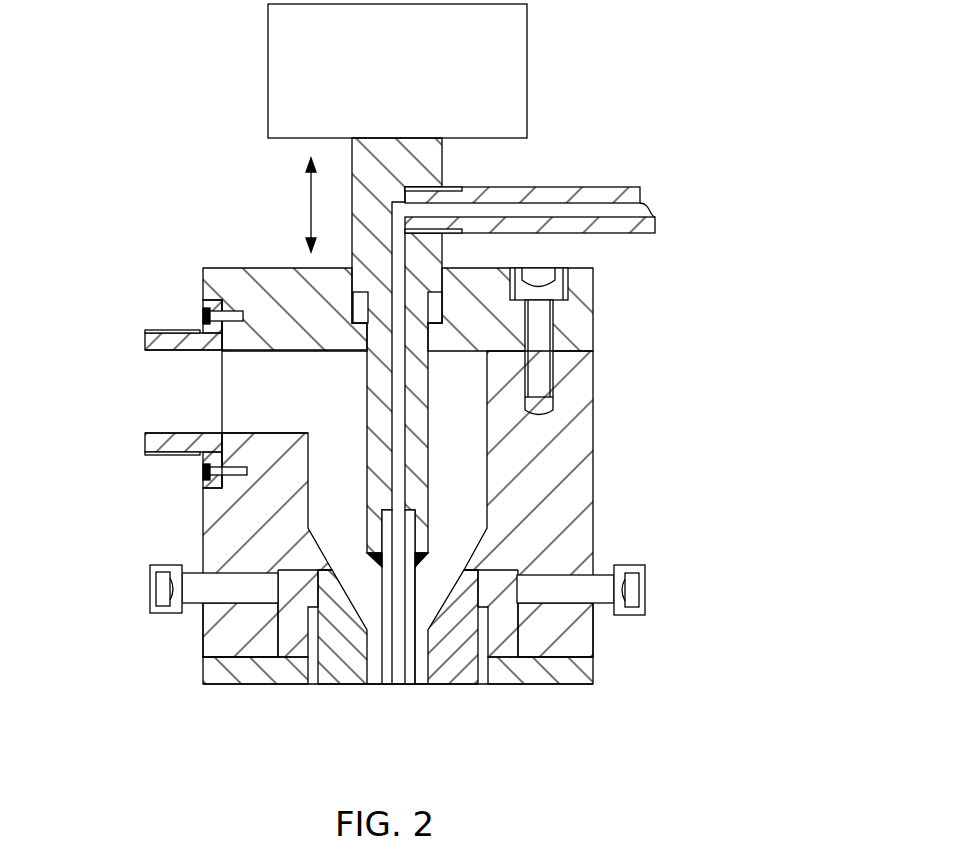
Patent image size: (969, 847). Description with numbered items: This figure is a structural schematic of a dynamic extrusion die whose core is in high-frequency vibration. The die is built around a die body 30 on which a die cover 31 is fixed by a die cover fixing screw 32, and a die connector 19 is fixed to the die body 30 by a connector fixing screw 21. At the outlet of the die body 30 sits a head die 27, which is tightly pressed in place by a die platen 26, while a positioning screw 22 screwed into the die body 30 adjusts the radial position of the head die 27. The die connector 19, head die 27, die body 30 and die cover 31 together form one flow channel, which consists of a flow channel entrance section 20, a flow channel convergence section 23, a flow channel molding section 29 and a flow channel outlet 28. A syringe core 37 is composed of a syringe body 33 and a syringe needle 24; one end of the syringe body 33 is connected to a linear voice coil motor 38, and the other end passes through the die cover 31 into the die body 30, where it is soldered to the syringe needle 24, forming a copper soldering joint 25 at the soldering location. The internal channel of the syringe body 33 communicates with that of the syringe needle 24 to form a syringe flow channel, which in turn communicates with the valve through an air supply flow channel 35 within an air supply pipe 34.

The die connector 19 is at (182, 343).
The flow channel entrance section 20 is at (180, 405).
The connector fixing screw 21 is at (205, 470).
The positioning screw 22 is at (177, 600).
The flow channel convergence section 23 is at (447, 569).
The syringe needle 24 is at (380, 565).
The copper soldering joint 25 is at (430, 567).
The die platen 26 is at (225, 678).
The head die 27 is at (328, 677).
The flow channel outlet 28 is at (375, 686).
The flow channel molding section 29 is at (420, 657).
The die body 30 is at (547, 476).
The die cover 31 is at (565, 322).
The die cover fixing screw 32 is at (543, 272).
The syringe body 33 is at (377, 473).
The air supply pipe 34 is at (565, 197).
The air supply flow channel 35 is at (595, 208).
The syringe core 37 is at (380, 589).
The linear voice coil motor 38 is at (485, 60).